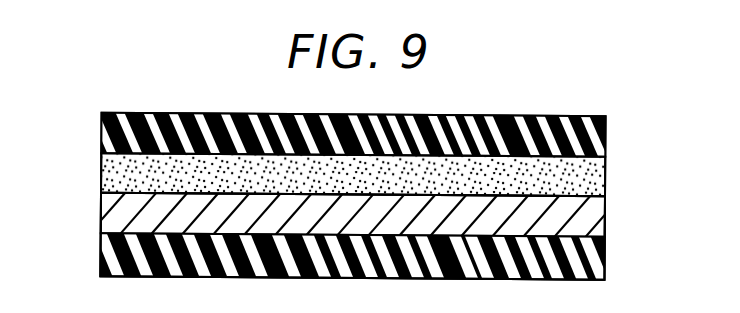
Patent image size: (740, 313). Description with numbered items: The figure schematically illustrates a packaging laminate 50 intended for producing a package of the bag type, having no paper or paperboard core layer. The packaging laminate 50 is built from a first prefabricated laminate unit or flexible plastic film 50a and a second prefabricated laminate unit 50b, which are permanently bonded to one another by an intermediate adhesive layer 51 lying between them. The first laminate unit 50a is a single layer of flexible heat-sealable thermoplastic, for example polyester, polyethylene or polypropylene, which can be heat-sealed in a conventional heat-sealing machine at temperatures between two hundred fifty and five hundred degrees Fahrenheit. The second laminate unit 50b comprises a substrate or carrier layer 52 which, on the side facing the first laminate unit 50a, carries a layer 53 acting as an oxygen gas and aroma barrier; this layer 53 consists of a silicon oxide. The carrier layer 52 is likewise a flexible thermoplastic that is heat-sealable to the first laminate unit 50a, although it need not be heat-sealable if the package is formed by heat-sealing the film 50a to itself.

The packaging laminate 50 is at (620, 96).
The first prefabricated laminate unit or flexible plastic film 50a is at (612, 116).
The second prefabricated laminate unit 50b is at (612, 197).
The intermediate adhesive layer 51 is at (101, 170).
The substrate or carrier layer 52 is at (101, 256).
The oxygen gas and aroma barrier layer 53 is at (101, 212).